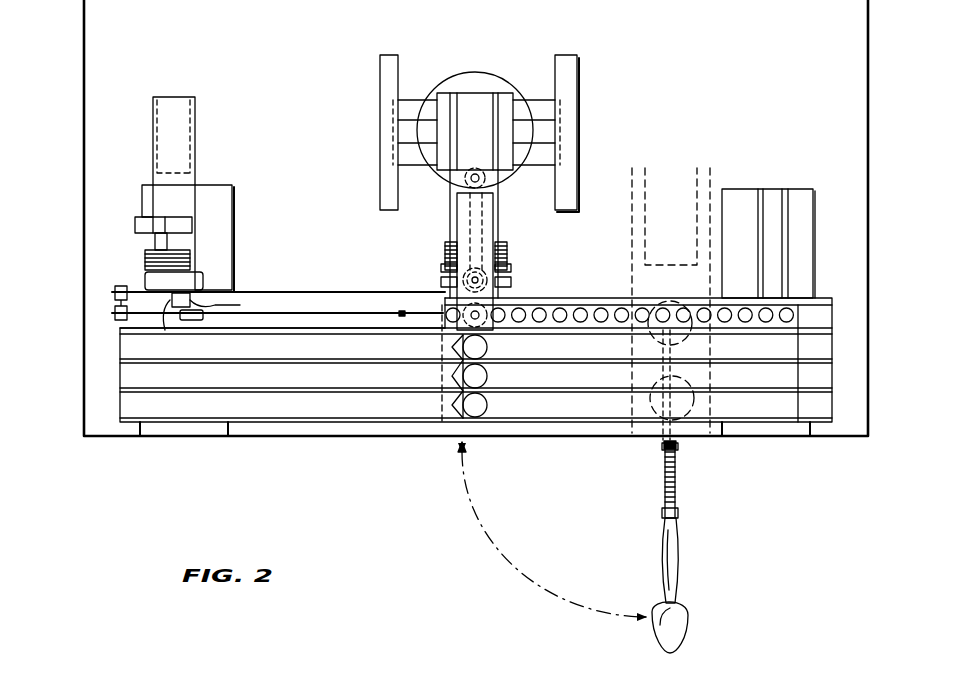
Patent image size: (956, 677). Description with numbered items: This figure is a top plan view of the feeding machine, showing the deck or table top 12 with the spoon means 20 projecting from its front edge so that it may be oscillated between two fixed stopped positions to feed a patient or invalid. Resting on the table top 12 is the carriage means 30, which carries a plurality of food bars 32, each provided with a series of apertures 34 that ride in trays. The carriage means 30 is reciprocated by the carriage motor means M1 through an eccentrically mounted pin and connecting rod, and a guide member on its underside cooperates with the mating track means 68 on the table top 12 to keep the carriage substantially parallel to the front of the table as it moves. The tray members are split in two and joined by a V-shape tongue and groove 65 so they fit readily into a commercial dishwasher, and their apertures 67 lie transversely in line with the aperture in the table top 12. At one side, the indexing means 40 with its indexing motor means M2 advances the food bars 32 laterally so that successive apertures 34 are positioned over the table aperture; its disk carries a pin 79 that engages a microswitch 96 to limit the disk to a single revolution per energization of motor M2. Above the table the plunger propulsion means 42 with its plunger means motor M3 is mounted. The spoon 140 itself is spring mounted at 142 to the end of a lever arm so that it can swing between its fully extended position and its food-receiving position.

The deck or table top 12 is at (860, 57).
The spoon means 20 is at (704, 560).
The carriage means 30 is at (844, 349).
The food bars 32 is at (655, 305).
The apertures 34 is at (602, 309).
The indexing means 40 is at (214, 240).
The plunger propulsion means 42 is at (507, 283).
The V-shape tongue and groove 65 is at (450, 412).
The apertures 67 is at (497, 412).
The mating track means 68 is at (788, 200).
The pin 79 is at (215, 305).
The microswitch 96 is at (170, 300).
The spoon 140 is at (684, 623).
The spring mounting 142 is at (680, 490).
The carriage motor means M1 is at (530, 80).
The indexing motor means M2 is at (128, 243).
The plunger means motor M3 is at (447, 257).